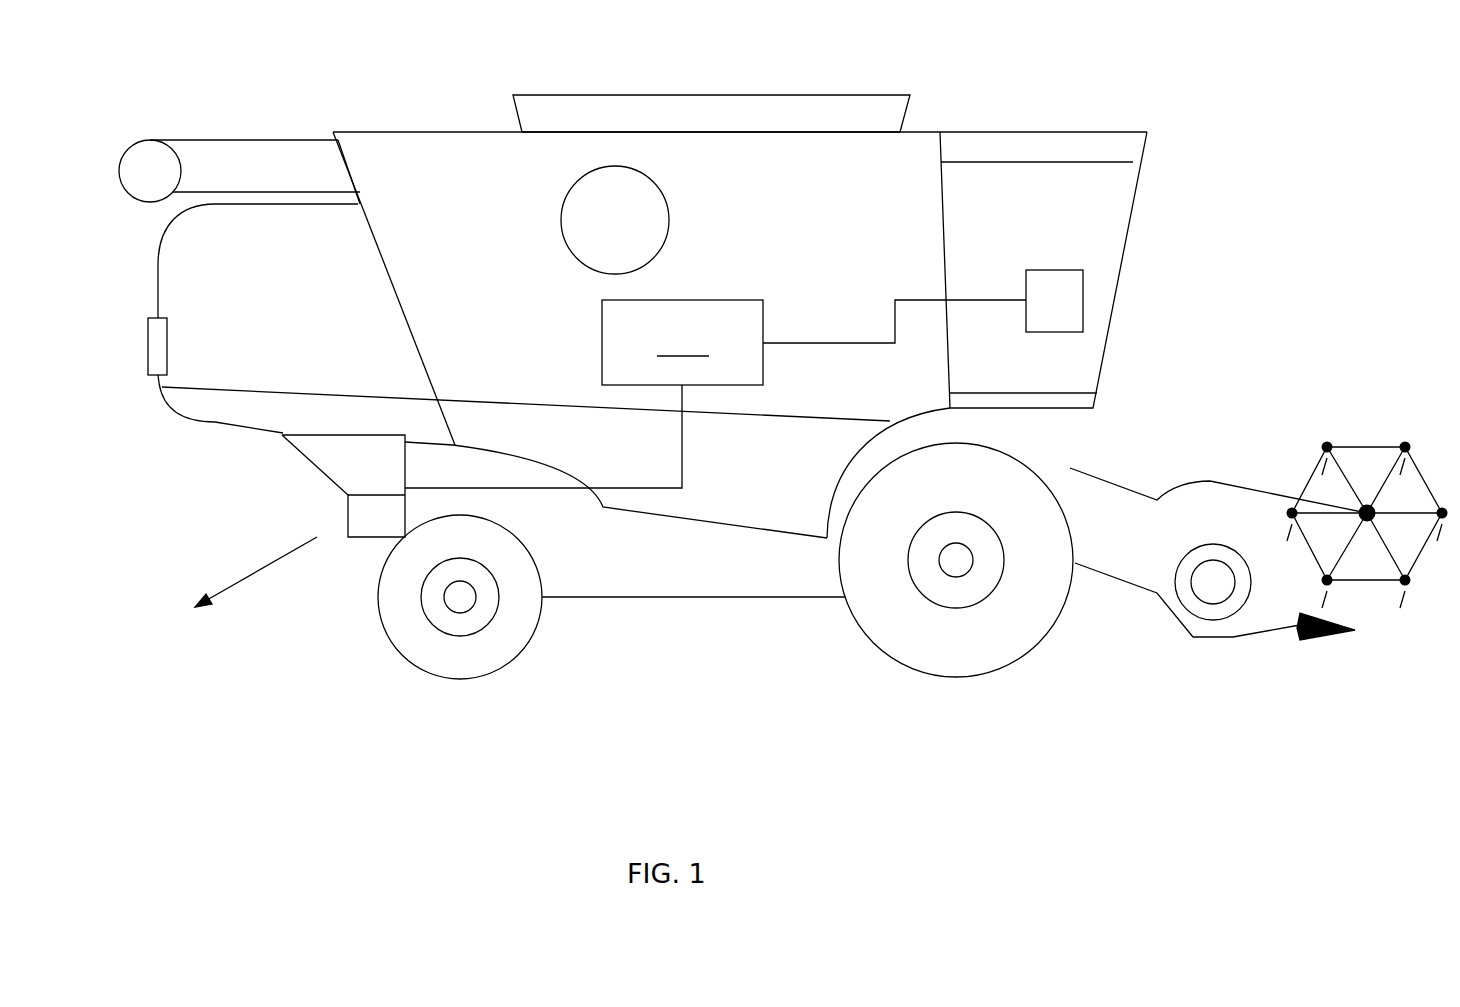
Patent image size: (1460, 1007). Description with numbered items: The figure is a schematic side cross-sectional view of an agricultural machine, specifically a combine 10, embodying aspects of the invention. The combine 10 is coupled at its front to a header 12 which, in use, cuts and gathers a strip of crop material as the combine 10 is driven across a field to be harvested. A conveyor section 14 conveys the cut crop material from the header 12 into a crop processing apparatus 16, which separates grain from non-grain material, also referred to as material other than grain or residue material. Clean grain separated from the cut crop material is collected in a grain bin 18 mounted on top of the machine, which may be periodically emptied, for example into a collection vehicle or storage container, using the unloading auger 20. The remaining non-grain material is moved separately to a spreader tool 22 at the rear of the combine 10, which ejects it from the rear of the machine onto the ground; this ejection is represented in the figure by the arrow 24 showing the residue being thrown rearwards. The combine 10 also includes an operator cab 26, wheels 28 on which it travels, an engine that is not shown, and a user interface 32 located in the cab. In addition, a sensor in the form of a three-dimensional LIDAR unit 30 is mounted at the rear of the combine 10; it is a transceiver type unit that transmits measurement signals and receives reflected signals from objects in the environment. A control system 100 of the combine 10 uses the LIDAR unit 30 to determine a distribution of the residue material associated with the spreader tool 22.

The combine 10 is at (1218, 96).
The header 12 is at (1350, 610).
The conveyor section 14 is at (1137, 587).
The crop processing apparatus 16 is at (727, 507).
The grain bin 18 is at (715, 93).
The unloading auger 20 is at (235, 160).
The spreader tool 22 is at (373, 538).
The arrow 24 is at (256, 577).
The operator cab 26 is at (1083, 200).
The wheels 28 is at (462, 634).
The LIDAR unit 30 is at (148, 347).
The user interface 32 is at (1083, 300).
The control system 100 is at (715, 394).